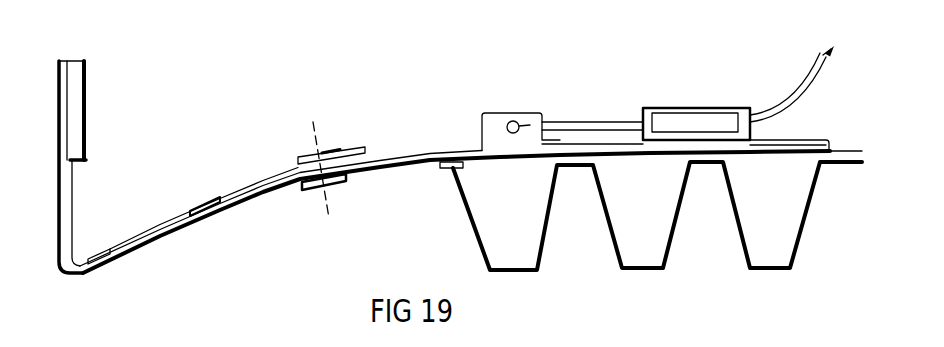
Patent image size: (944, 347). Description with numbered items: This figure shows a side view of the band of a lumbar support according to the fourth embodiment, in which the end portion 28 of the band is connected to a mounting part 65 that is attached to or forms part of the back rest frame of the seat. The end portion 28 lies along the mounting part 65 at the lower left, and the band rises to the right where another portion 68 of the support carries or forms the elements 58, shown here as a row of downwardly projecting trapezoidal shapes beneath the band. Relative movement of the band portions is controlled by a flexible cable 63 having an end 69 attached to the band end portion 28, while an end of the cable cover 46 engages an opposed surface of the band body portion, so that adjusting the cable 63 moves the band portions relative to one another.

The end portion 28 is at (238, 206).
The mounting part 65 is at (165, 220).
The cable end 69 is at (513, 118).
The portion of the support 68 is at (447, 174).
The elements 58 is at (476, 252).
The flexible cable 63 is at (786, 88).
The cable cover 46 is at (819, 82).